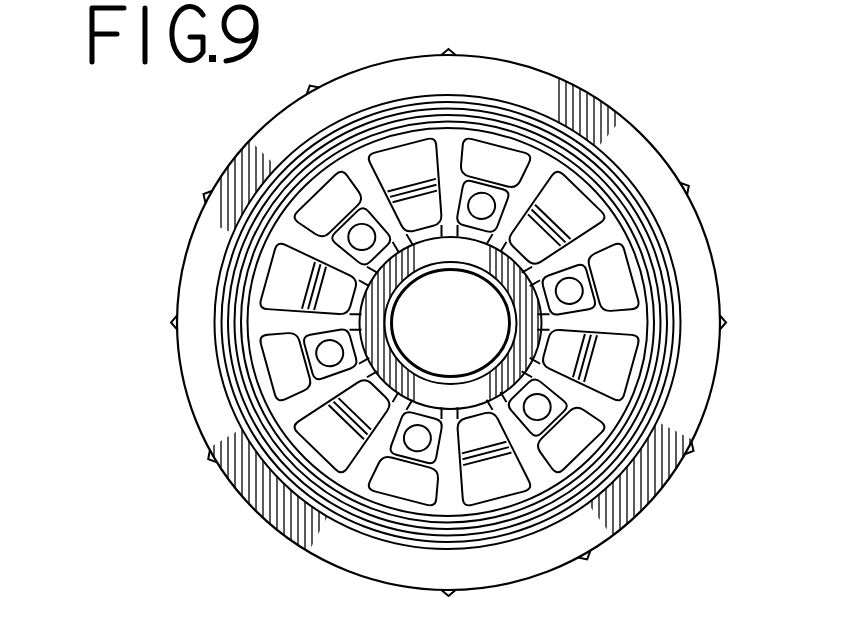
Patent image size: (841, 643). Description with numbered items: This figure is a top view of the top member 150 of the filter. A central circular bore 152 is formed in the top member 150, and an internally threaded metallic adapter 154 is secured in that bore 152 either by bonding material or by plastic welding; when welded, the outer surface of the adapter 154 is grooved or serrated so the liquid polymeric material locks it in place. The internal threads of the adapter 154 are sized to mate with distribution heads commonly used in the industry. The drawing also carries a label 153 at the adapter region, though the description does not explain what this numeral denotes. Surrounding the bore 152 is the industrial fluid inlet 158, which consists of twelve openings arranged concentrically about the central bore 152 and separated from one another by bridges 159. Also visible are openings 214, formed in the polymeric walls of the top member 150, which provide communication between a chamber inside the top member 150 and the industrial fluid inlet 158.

The top member 150 is at (172, 191).
The circular bore 152 is at (522, 292).
The hub bore ring 153 is at (450, 292).
The internally threaded metallic adapter 154 is at (522, 302).
The industrial fluid inlet 158 is at (332, 193).
The bridges 159 is at (490, 200).
The openings 214 is at (543, 407).